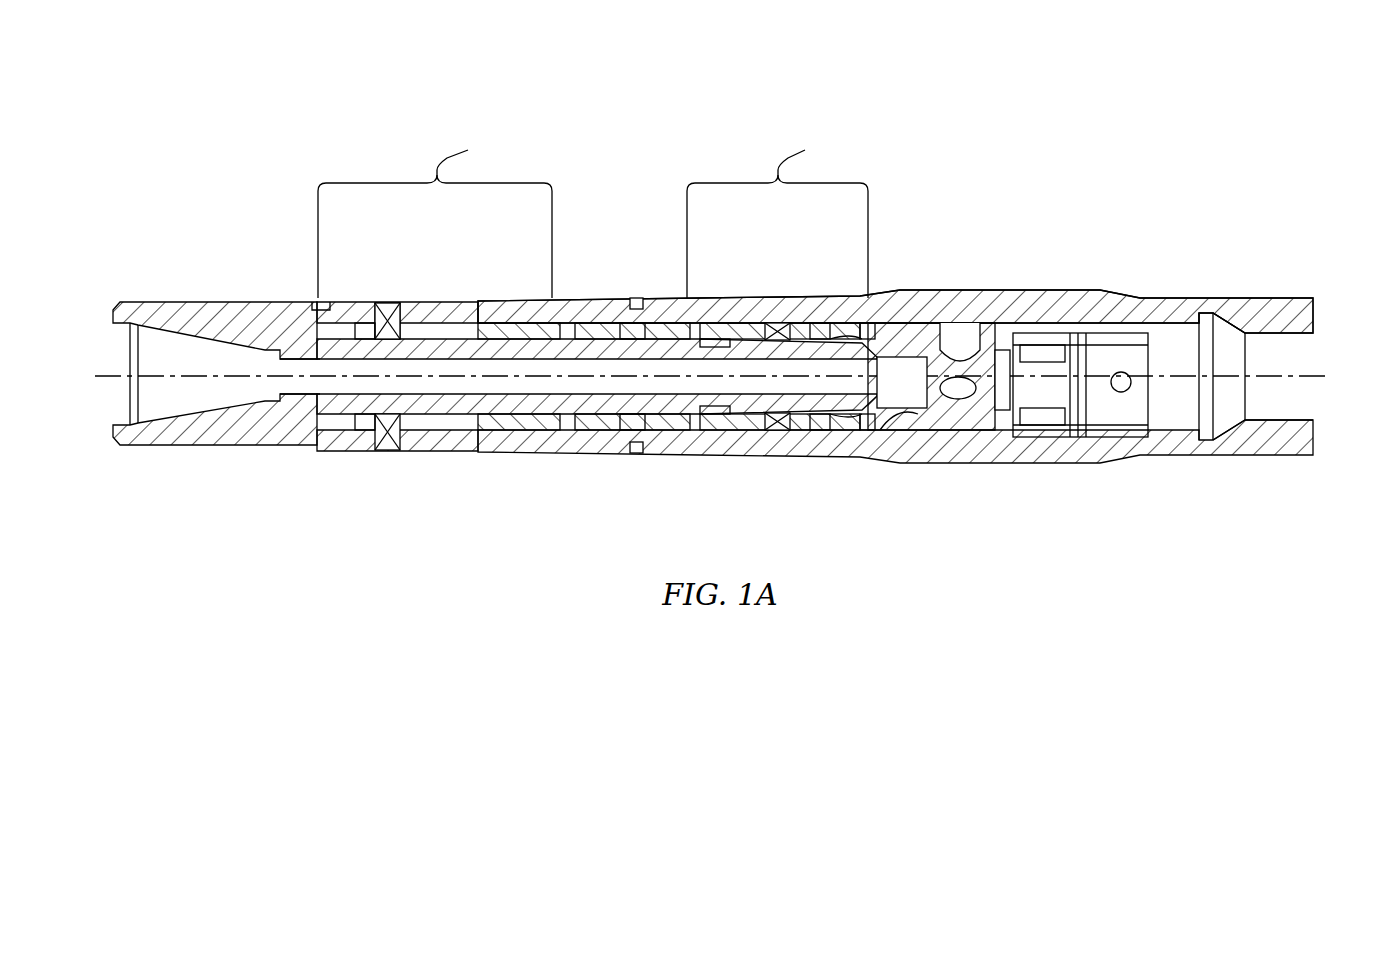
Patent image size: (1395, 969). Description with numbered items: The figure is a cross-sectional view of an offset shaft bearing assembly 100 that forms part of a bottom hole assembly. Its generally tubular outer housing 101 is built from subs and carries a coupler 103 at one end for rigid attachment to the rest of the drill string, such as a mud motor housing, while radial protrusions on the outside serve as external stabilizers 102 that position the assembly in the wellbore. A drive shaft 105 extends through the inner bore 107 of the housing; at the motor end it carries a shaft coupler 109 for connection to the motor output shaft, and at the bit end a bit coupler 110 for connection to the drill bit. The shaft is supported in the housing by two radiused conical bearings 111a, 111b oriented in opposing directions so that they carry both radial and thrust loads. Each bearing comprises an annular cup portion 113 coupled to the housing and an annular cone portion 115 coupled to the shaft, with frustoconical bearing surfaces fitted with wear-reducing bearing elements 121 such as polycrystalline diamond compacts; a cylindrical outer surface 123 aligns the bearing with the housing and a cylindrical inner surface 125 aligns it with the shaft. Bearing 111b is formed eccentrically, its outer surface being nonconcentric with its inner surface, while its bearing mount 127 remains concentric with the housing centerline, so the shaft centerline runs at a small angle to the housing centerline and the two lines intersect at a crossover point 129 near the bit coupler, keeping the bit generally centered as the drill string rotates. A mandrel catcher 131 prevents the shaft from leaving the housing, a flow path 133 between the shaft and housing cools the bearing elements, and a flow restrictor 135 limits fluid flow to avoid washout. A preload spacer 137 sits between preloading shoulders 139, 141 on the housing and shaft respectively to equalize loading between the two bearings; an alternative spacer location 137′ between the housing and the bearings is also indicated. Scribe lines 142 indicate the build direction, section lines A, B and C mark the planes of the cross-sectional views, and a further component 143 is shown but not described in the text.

The offset shaft bearing assembly 100 is at (282, 132).
The outer housing 101 is at (1160, 314).
The external stabilizers 102 is at (940, 295).
The coupler 103 is at (1272, 338).
The drive shaft 105 is at (600, 405).
The inner bore 107 is at (1199, 310).
The shaft coupler 109 is at (1125, 415).
The bit coupler 110 is at (182, 323).
The bearing 111a is at (435, 212).
The bearing 111b is at (777, 212).
The cup portion 113 is at (433, 450).
The cone portion 115 is at (365, 450).
The bearing elements 121 is at (393, 442).
The outer surface 123 is at (772, 450).
The inner surface 125 is at (852, 445).
The bearing mount 127 is at (718, 449).
The crossover point 129 is at (293, 380).
The mandrel catcher 131 is at (520, 448).
The flow path 133 is at (885, 302).
The flow restrictor 135 is at (588, 302).
The preload spacer 137 is at (905, 443).
The preload spacer 137′ is at (470, 300).
The preloading shoulder 139 is at (878, 443).
The preloading shoulder 141 is at (942, 443).
The scribe lines 142 is at (373, 303).
The spacer 143 is at (636, 453).
The section A- A is at (376, 535).
The section B- B is at (681, 535).
The section C- C is at (759, 535).